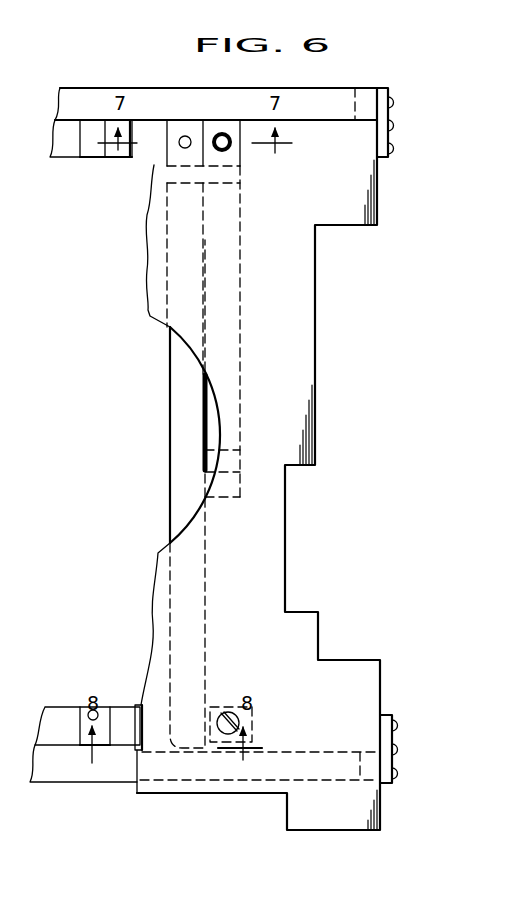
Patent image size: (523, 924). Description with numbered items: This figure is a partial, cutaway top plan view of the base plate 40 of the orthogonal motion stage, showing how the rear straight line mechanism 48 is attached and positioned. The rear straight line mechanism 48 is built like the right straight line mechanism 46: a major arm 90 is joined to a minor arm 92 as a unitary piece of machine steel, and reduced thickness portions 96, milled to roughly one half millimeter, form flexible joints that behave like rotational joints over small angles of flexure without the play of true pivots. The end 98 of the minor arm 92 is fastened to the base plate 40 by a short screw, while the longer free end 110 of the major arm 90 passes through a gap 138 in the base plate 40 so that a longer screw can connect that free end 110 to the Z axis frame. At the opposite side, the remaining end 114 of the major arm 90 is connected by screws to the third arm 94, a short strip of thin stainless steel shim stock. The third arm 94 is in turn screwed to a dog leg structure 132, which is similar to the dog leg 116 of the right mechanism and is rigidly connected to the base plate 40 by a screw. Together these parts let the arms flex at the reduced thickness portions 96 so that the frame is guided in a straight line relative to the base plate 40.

The base plate 40 is at (378, 200).
The right straight line mechanism 46 is at (88, 700).
The rear straight line mechanism 48 is at (157, 443).
The major arm portion 90 is at (97, 88).
The minor arm portion 92 is at (65, 157).
The third arm 94 is at (389, 100).
The reduced thickness portions 96 is at (243, 460).
The end of the minor arm 98 is at (232, 148).
The free end of the major arm 110 is at (167, 143).
The remaining end of the major arm 114 is at (390, 95).
The dog leg 116 is at (389, 132).
The dog leg structure 132 is at (258, 727).
The gap in the base plate 138 is at (146, 208).